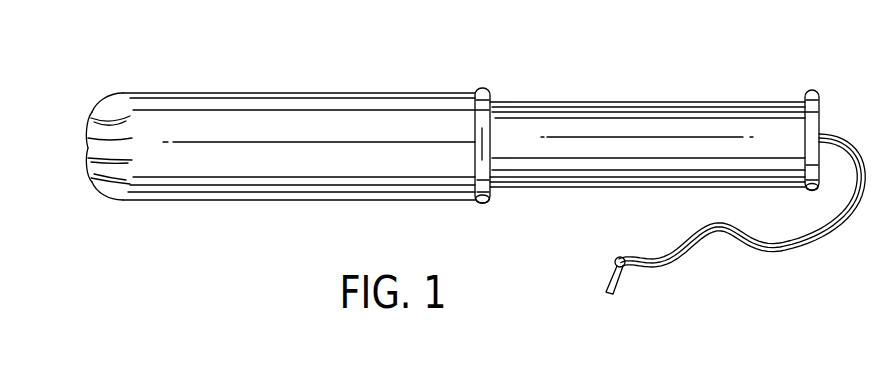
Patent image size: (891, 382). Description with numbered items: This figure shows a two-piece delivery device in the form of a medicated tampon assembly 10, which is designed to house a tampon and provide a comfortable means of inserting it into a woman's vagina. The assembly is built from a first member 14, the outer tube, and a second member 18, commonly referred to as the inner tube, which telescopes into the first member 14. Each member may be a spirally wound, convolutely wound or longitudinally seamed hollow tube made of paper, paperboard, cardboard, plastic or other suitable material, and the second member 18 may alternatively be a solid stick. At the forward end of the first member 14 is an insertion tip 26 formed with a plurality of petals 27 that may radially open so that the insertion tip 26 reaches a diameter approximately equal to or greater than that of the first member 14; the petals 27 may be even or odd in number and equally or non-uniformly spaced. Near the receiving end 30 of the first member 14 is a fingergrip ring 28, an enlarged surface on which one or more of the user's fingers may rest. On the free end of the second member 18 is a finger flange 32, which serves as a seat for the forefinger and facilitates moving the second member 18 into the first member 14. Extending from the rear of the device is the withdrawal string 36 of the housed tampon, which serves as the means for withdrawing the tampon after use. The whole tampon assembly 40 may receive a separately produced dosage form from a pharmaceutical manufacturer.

The medicated tampon assembly 10 is at (393, 58).
The first member 14 is at (245, 92).
The second member 18 is at (568, 103).
The insertion tip 26 is at (97, 93).
The petals 27 is at (87, 150).
The fingergrip ring 28 is at (481, 87).
The receiving end 30 is at (488, 203).
The finger flange 32 is at (813, 88).
The withdrawal string 36 is at (768, 247).
The tampon assembly 40 is at (286, 226).